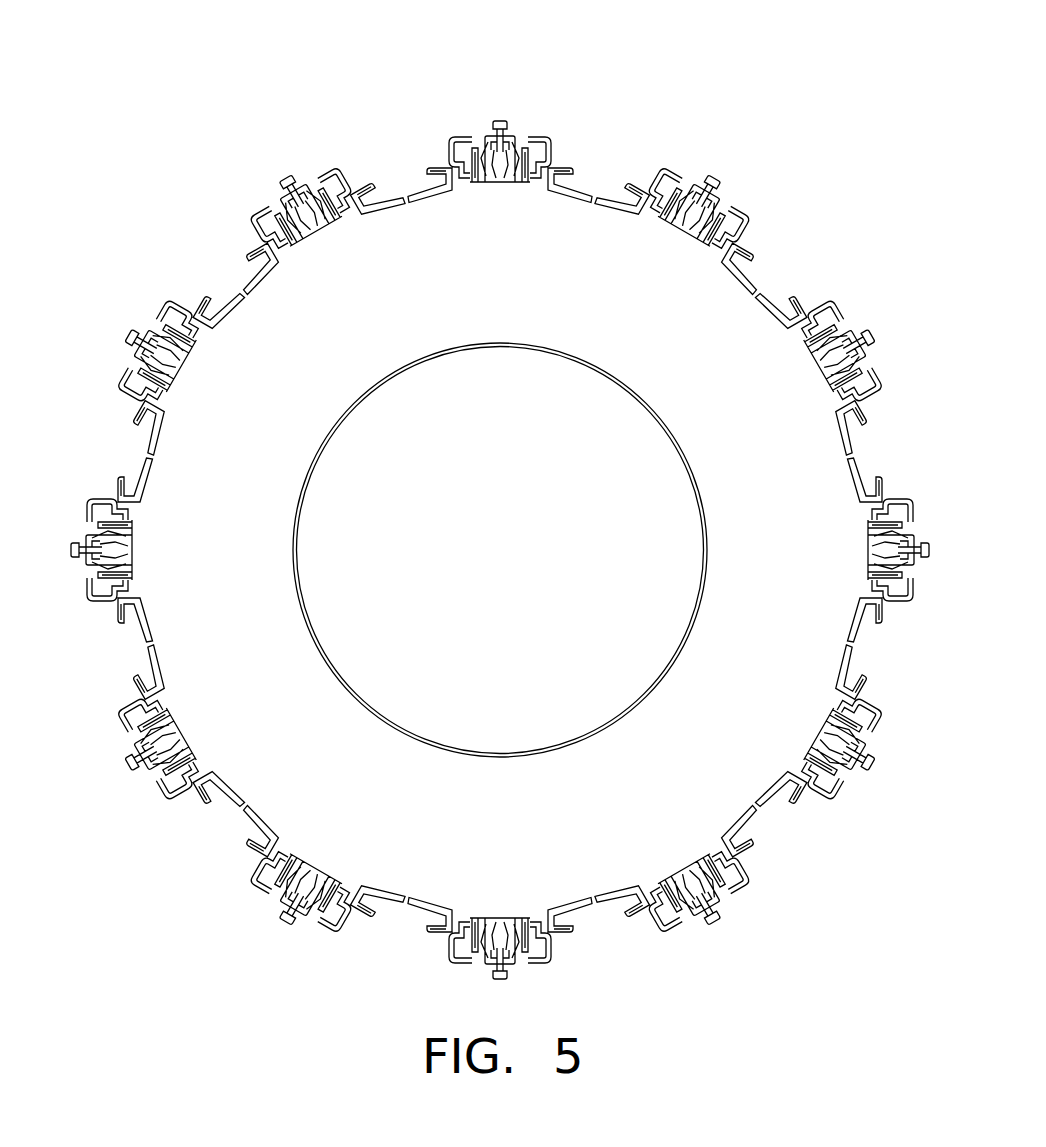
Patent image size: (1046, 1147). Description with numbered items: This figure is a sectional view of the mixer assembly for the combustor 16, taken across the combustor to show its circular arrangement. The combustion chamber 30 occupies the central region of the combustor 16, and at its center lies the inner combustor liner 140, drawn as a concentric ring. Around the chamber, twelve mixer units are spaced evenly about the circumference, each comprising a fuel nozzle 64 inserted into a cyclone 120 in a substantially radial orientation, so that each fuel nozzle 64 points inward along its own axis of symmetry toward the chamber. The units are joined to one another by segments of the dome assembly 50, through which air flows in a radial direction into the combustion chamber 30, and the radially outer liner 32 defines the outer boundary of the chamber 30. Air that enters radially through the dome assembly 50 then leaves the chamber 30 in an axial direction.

The combustor 16 is at (527, 78).
The combustion chamber 30 is at (547, 810).
The radially outer liner 32 is at (858, 440).
The dome assembly 50 is at (767, 285).
The fuel nozzle 64 is at (742, 184).
The cyclone 120 is at (667, 168).
The inner combustor liner 140 is at (583, 358).